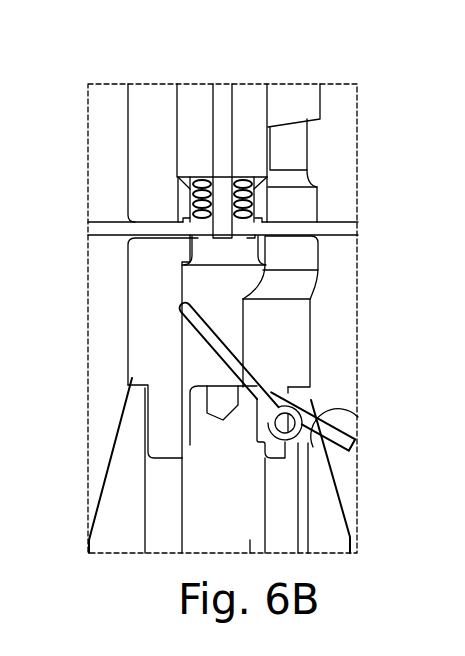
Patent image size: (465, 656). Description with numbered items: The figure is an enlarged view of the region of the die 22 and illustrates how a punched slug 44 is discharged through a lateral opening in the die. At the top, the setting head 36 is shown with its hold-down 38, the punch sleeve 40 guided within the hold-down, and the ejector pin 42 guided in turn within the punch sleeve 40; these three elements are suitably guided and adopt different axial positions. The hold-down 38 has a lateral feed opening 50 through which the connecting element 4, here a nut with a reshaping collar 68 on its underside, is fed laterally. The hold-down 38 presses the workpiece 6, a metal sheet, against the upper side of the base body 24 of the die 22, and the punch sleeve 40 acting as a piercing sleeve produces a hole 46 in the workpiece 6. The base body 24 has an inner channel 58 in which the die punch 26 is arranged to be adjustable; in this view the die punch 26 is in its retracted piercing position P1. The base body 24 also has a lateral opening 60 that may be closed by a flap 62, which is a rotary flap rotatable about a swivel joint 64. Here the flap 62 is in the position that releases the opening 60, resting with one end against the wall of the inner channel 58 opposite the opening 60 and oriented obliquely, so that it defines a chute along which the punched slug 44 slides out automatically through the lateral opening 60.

The setting head 36 is at (124, 101).
The hold-down 38 is at (135, 120).
The ejector pin 42 is at (220, 98).
The punch sleeve 40 is at (262, 98).
The lateral feed opening 50 is at (300, 158).
The connecting element 4 is at (183, 197).
The workpiece 6 is at (337, 220).
The hole 46 is at (195, 237).
The reshaping collar 68 is at (253, 256).
The base body 24 is at (135, 288).
The lateral opening 60 is at (303, 333).
The flap 62 is at (245, 370).
The inner channel 58 is at (195, 345).
The punched slug 44 is at (318, 414).
The swivel joint 64 is at (357, 443).
The die 22 is at (150, 373).
The die punch 26 is at (203, 518).
The retracted piercing position P1 is at (250, 540).